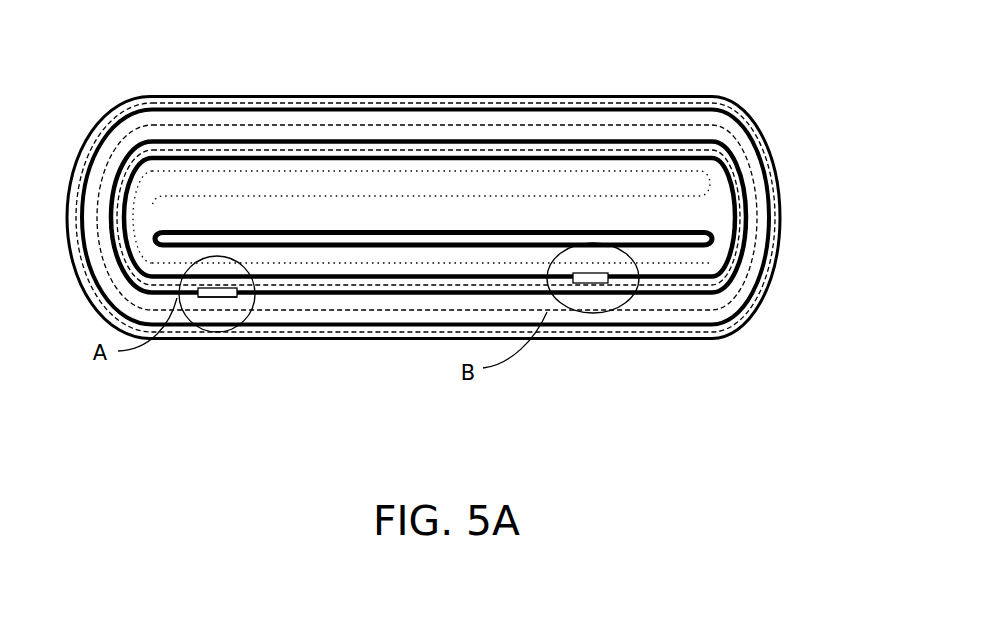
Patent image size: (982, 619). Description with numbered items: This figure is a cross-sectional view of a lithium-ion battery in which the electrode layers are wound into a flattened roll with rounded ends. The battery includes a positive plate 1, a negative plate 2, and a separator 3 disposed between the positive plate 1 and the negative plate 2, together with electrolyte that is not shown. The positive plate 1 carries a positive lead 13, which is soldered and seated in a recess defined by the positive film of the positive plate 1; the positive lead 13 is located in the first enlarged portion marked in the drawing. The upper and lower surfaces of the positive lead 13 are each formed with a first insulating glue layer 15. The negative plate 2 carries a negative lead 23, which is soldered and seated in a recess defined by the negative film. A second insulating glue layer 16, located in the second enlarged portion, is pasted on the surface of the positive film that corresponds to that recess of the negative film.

The positive plate 1 is at (308, 298).
The negative plate 2 is at (763, 268).
The separator 3 is at (597, 127).
The positive lead 13 is at (218, 298).
The first insulating glue layer 15 is at (198, 298).
The second insulating glue layer 16 is at (570, 302).
The negative lead 23 is at (610, 313).